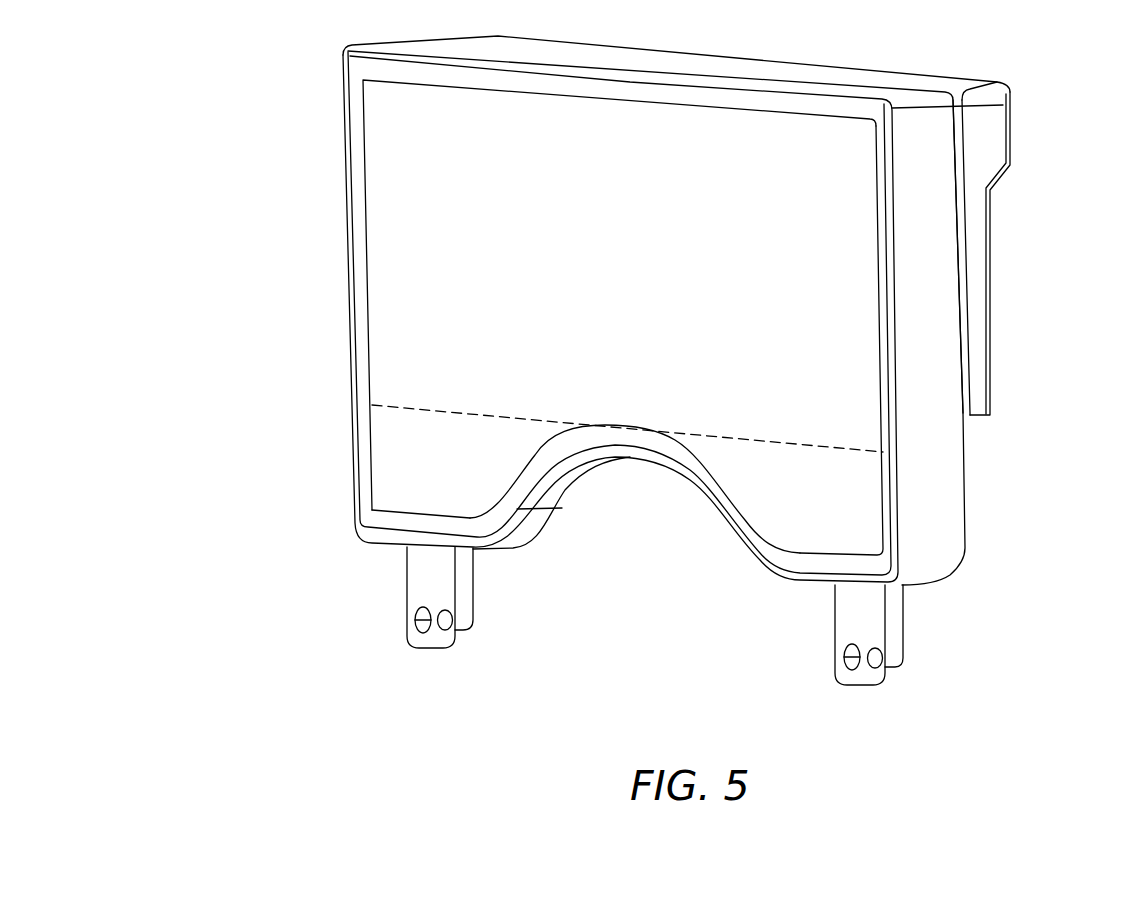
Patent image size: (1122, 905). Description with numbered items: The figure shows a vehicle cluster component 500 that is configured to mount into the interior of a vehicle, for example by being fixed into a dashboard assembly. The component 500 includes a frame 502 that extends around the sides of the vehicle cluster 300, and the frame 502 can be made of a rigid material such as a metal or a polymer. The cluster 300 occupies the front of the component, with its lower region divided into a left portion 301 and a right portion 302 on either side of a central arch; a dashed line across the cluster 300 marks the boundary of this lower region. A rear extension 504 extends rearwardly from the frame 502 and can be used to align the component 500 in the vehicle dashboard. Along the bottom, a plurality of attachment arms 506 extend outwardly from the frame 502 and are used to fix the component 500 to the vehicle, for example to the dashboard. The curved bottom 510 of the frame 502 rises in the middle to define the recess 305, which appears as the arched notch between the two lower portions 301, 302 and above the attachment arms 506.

The vehicle cluster 300 is at (405, 230).
The first display portion 301 is at (412, 445).
The second display portion 302 is at (840, 483).
The recess 305 is at (664, 490).
The vehicle cluster component 500 is at (1044, 89).
The frame 502 is at (945, 294).
The rear extension 504 is at (983, 160).
The attachment arms 506 is at (432, 636).
The curved bottom 510 is at (555, 487).